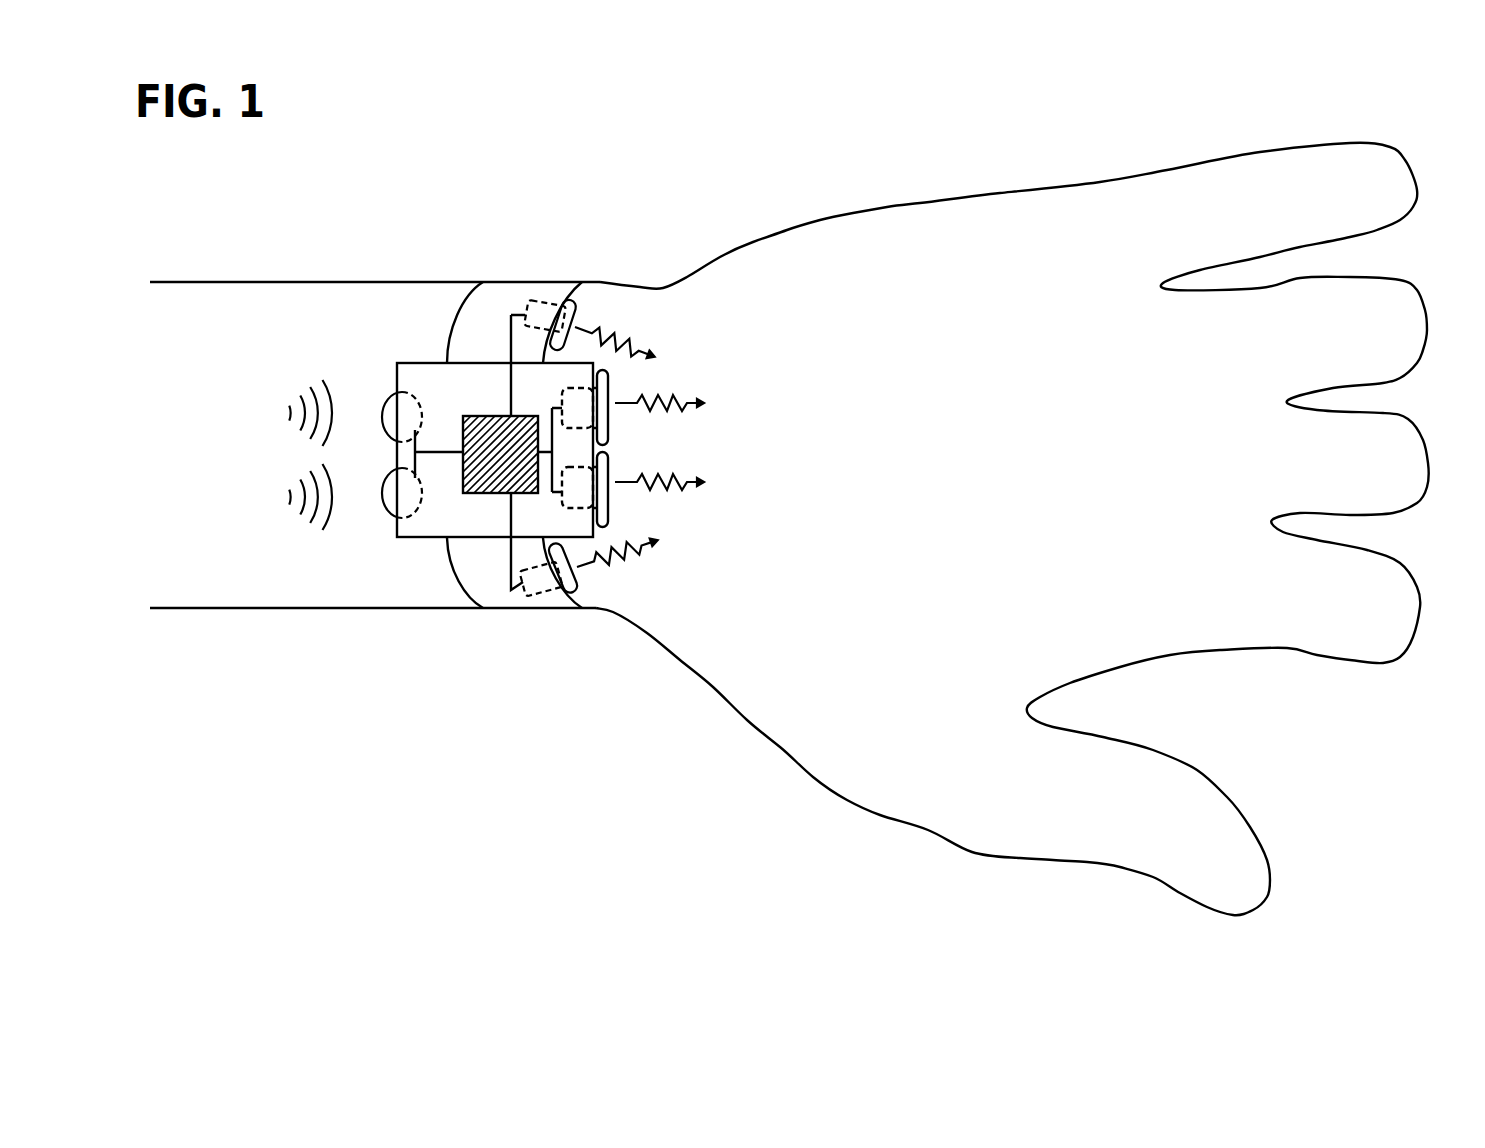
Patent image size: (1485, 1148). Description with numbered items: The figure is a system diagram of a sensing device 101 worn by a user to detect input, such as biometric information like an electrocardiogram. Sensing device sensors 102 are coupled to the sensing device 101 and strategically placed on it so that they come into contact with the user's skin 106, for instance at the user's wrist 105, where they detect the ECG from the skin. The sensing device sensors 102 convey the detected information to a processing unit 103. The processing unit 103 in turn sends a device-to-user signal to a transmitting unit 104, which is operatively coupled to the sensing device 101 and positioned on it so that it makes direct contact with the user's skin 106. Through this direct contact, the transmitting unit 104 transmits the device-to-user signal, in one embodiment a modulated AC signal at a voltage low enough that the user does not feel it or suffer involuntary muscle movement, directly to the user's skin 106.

The sensing device 101 is at (638, 268).
The sensing device sensors 102 is at (383, 378).
The processing unit 103 is at (487, 493).
The transmitting unit 104 is at (578, 312).
The user's wrist 105 is at (590, 587).
The user's skin 106 is at (817, 303).